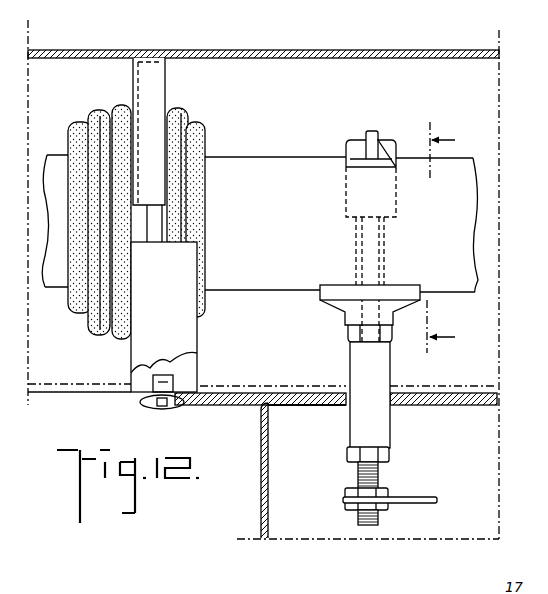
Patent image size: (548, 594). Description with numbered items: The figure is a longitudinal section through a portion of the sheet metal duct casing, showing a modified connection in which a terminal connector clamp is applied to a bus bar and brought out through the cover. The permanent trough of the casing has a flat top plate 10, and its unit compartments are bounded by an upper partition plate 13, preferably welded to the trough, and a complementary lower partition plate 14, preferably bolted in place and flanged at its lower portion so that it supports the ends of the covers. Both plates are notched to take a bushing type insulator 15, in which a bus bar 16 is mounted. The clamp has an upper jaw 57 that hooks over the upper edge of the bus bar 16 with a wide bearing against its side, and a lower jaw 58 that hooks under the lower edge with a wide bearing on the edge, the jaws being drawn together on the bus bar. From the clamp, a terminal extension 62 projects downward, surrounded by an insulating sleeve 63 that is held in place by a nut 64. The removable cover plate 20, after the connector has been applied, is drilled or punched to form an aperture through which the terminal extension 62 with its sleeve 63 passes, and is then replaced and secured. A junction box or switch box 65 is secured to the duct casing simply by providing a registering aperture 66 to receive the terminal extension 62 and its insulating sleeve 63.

The top plate 10 is at (287, 55).
The upper partition plate 13 is at (155, 80).
The lower partition plate 14 is at (137, 353).
The bushing type insulator 15 is at (190, 136).
The bus bar 16 is at (255, 170).
The cover plate 20 is at (233, 398).
The upper jaw 57 is at (381, 145).
The lower jaw 58 is at (362, 298).
The terminal extension 62 is at (377, 477).
The insulating sleeve 63 is at (381, 430).
The nut 64 is at (386, 455).
The junction box 65 is at (258, 500).
The registering aperture 66 is at (346, 403).